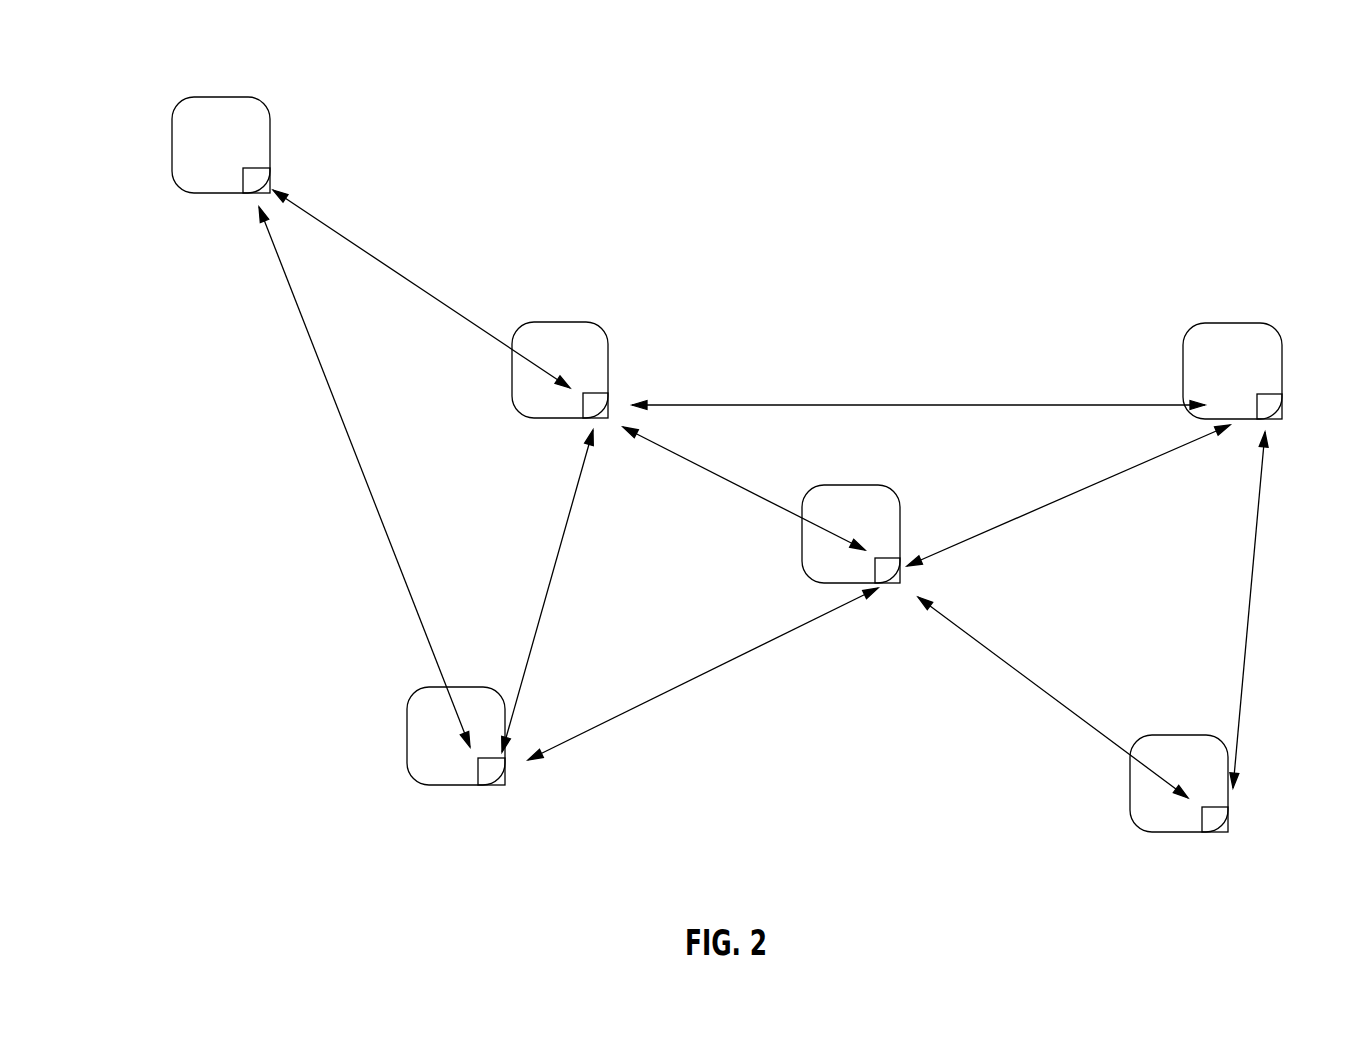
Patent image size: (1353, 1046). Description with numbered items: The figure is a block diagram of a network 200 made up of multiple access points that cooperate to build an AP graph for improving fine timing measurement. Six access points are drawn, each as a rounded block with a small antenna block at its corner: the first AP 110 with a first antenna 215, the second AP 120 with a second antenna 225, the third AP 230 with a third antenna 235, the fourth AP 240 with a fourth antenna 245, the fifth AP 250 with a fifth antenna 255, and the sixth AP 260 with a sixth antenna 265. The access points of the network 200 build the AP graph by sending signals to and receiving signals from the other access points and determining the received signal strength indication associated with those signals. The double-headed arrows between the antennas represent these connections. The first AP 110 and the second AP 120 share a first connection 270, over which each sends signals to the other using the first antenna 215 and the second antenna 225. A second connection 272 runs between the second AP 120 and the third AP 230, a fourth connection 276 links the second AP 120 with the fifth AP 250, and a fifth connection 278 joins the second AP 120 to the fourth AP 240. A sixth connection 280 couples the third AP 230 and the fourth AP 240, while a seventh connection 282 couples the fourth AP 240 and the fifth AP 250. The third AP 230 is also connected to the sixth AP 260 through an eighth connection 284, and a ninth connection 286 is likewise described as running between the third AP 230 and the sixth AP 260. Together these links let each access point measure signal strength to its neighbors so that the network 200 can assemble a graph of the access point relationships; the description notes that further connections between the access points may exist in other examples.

The network 200 is at (142, 74).
The first AP 110 is at (220, 97).
The first antenna 215 is at (253, 193).
The second AP 120 is at (560, 322).
The second antenna 225 is at (595, 407).
The third AP 230 is at (1230, 323).
The third antenna 235 is at (1268, 403).
The fourth AP 240 is at (850, 485).
The fourth antenna 245 is at (887, 583).
The fifth AP 250 is at (442, 785).
The fifth antenna 255 is at (493, 773).
The sixth AP 260 is at (1163, 817).
The sixth antenna 265 is at (1215, 820).
The first connection 270 is at (380, 258).
The second connection 272 is at (1060, 405).
The fourth connection 276 is at (560, 552).
The fifth connection 278 is at (330, 383).
The sixth connection 280 is at (1023, 513).
The seventh connection 282 is at (695, 683).
The eighth connection 284 is at (977, 637).
The ninth connection 286 is at (1257, 518).